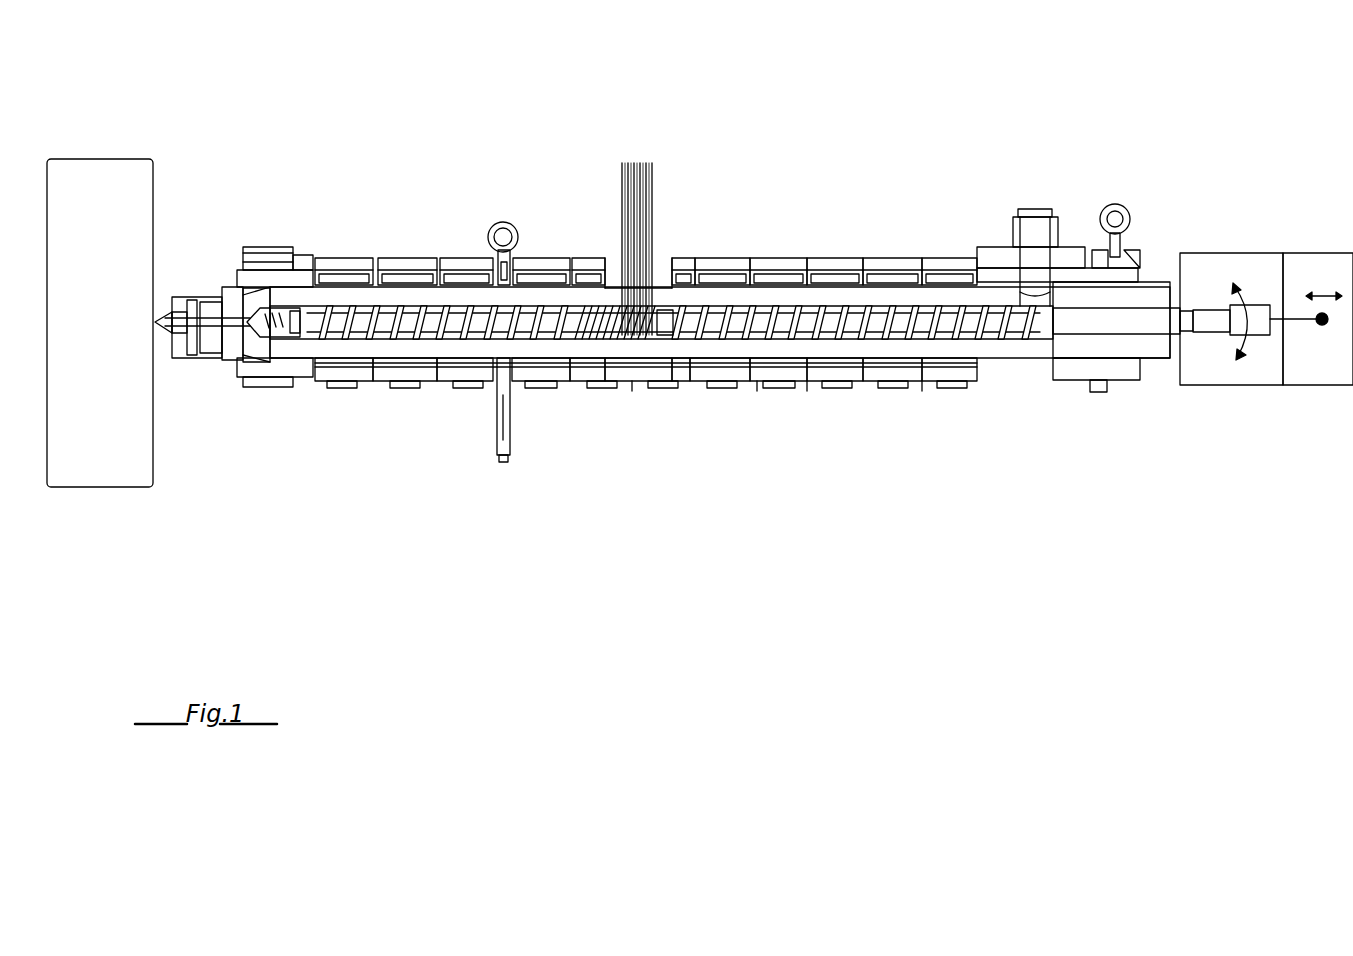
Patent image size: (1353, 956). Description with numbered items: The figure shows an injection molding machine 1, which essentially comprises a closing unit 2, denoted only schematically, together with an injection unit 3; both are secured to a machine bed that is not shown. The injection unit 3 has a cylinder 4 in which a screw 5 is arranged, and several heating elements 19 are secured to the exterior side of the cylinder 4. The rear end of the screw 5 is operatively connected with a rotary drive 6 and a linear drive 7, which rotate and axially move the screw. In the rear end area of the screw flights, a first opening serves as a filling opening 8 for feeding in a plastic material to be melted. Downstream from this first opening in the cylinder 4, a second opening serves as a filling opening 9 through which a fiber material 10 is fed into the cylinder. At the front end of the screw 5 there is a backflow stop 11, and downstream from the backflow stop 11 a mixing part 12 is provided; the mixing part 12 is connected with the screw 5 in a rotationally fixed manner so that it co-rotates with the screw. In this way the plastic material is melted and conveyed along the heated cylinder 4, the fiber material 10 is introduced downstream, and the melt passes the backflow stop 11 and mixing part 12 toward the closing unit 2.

The injection molding machine 1 is at (421, 111).
The closing unit 2 is at (84, 204).
The injection unit 3 is at (712, 308).
The cylinder 4 is at (927, 352).
The screw 5 is at (755, 326).
The rotary drive 6 is at (1227, 387).
The linear drive 7 is at (1317, 387).
The filling opening 8 is at (1033, 210).
The filling opening 9 is at (660, 263).
The fiber material 10 is at (610, 163).
The backflow stop 11 is at (310, 330).
The mixing part 12 is at (257, 327).
The heating elements 19 is at (403, 267).